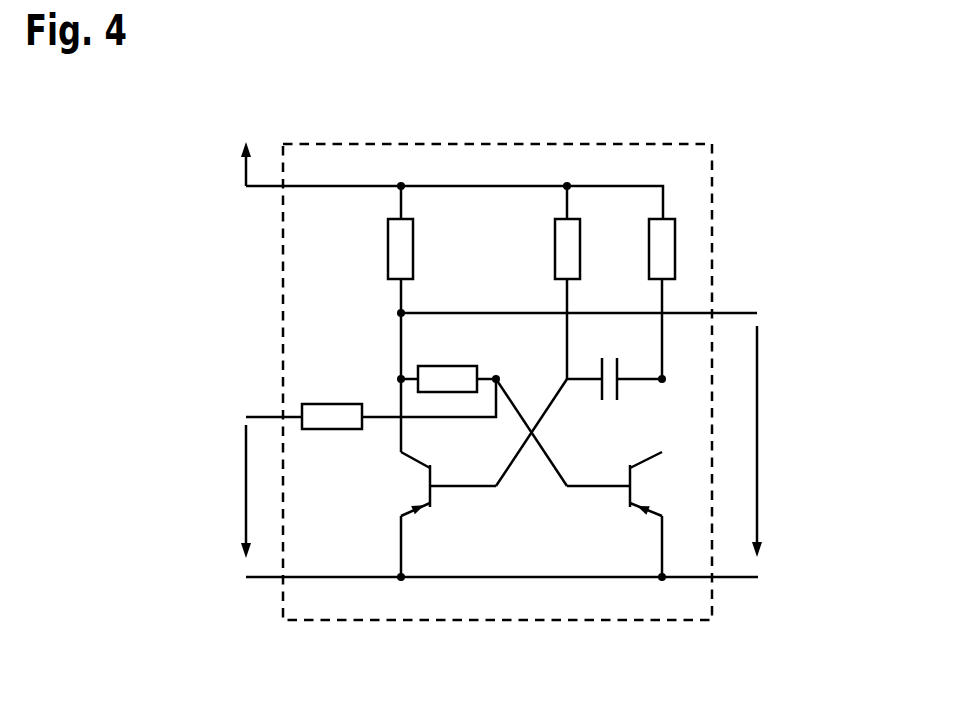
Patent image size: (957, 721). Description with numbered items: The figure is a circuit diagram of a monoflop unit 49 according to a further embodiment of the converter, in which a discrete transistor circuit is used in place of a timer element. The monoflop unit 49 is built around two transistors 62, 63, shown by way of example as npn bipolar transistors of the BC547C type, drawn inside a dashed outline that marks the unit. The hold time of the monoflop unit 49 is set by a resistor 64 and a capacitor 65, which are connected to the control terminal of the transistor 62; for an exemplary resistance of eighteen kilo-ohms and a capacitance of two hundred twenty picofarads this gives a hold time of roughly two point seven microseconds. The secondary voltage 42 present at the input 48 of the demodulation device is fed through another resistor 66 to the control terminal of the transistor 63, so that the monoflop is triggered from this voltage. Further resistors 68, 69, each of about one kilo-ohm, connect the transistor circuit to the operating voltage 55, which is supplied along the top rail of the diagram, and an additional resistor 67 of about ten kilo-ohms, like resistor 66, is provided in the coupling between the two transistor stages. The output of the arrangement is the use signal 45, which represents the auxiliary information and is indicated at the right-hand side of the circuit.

The secondary voltage 42 is at (246, 484).
The use signal 45 is at (757, 430).
The input 48 is at (190, 534).
The monoflop unit 49 is at (625, 144).
The operating voltage 55 is at (244, 145).
The transistor 62 is at (410, 510).
The transistor 63 is at (640, 510).
The resistor 64 is at (555, 250).
The capacitor 65 is at (617, 372).
The resistor 66 is at (330, 404).
The resistor 67 is at (466, 366).
The resistor 68 is at (388, 248).
The resistor 69 is at (675, 248).